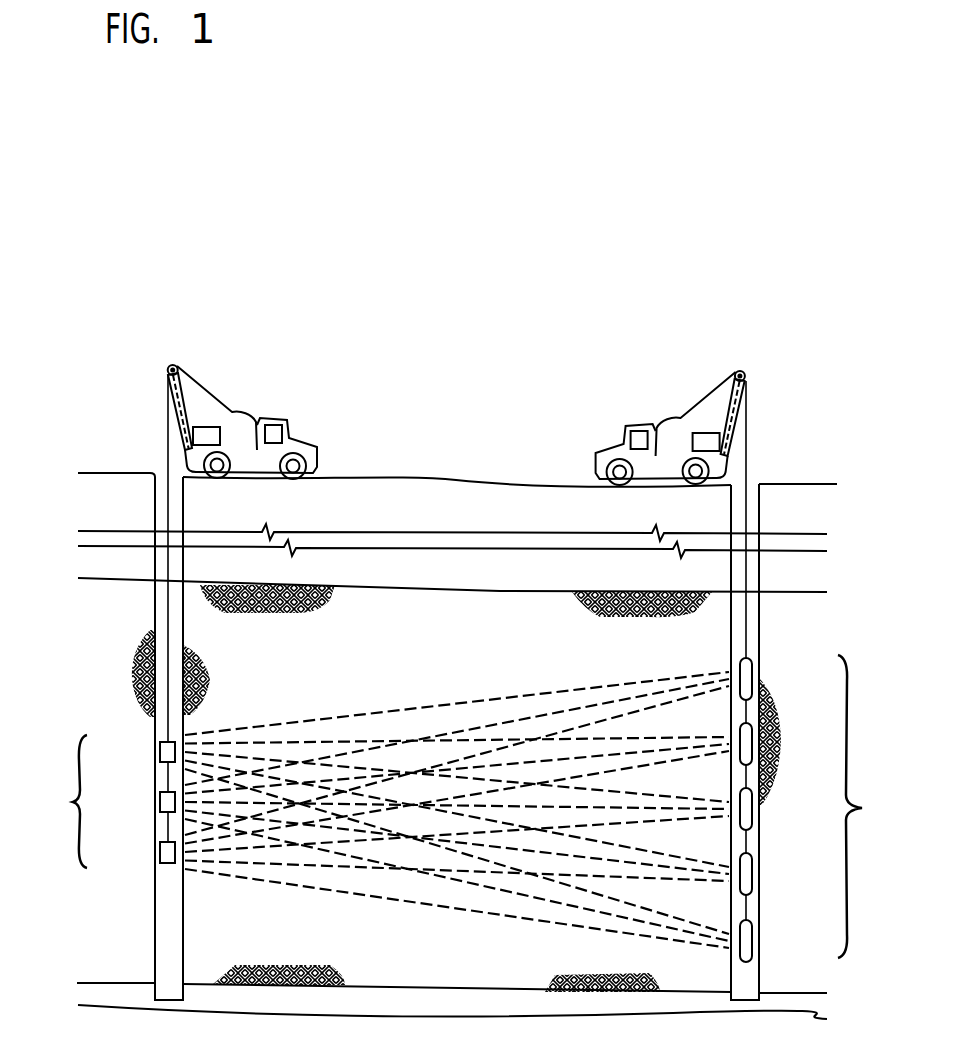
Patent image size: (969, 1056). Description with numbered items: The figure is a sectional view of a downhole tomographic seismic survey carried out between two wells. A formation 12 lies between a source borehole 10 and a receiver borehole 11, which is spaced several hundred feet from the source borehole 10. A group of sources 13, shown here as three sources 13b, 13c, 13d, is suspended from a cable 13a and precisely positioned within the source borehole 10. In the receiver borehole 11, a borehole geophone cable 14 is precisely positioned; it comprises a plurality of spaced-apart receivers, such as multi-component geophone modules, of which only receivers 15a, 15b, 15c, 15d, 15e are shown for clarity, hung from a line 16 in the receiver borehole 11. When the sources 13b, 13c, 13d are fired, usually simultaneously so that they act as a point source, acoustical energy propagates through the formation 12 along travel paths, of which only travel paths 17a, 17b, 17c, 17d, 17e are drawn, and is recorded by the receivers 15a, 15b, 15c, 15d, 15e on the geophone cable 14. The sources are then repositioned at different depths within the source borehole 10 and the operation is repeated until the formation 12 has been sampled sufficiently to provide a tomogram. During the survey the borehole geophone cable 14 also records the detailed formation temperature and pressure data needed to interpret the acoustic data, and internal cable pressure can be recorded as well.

The source borehole 10 is at (184, 620).
The receiver borehole 11 is at (729, 638).
The formation 12 is at (533, 640).
The sources 13 is at (62, 801).
The cable 13a is at (167, 611).
The source 13b is at (160, 752).
The source 13c is at (160, 802).
The source 13d is at (160, 852).
The borehole geophone cable 14 is at (869, 806).
The receiver 15a is at (746, 674).
The receiver 15b is at (746, 740).
The receiver 15c is at (746, 812).
The receiver 15d is at (746, 878).
The receiver 15e is at (746, 943).
The receiver cable 16 is at (759, 631).
The travel path 17a is at (433, 707).
The travel path 17b is at (365, 742).
The travel path 17c is at (297, 762).
The travel path 17d is at (248, 773).
The travel path 17e is at (213, 777).